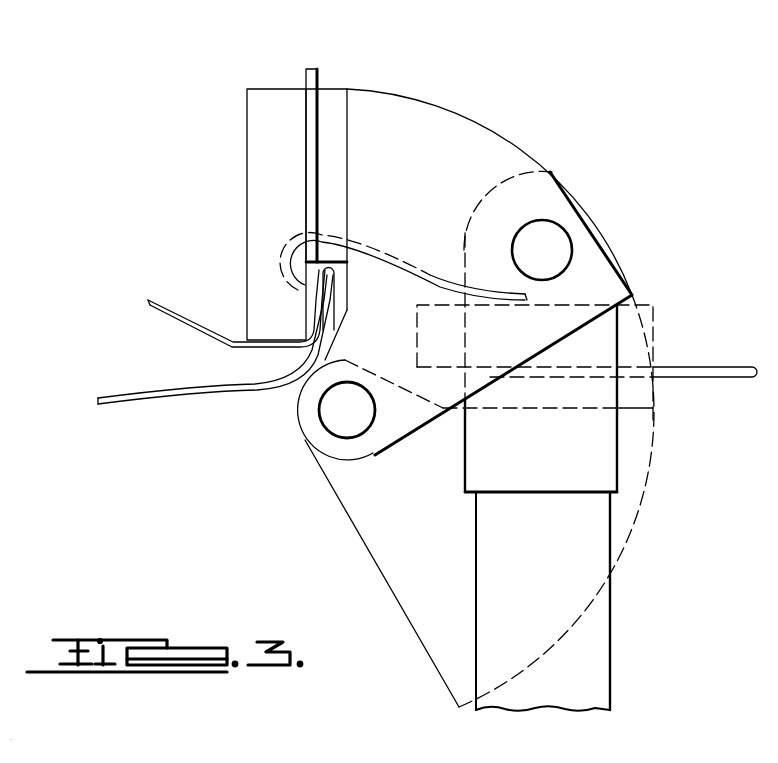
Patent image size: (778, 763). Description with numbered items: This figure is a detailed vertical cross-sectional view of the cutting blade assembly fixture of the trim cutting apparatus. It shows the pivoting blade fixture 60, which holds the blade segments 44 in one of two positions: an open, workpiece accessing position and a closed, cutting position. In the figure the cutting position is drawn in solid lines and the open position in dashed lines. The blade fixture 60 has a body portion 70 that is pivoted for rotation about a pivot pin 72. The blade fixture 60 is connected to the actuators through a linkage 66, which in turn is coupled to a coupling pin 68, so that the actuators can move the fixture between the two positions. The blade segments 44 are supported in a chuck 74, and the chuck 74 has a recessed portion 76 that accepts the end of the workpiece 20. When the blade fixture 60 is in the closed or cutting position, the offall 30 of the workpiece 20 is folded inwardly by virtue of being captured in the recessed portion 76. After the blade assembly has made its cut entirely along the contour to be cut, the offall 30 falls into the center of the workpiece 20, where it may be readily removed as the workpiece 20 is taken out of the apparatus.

The workpiece 20 is at (190, 396).
The offall 30 is at (172, 305).
The blade segment 44 is at (315, 80).
The blade fixture 60 is at (580, 142).
The linkage 66 is at (598, 654).
The coupling pin 68 is at (563, 254).
The body portion 70 is at (420, 112).
The pivot pin 72 is at (330, 414).
The chuck 74 is at (340, 166).
The recessed portion 76 is at (340, 290).